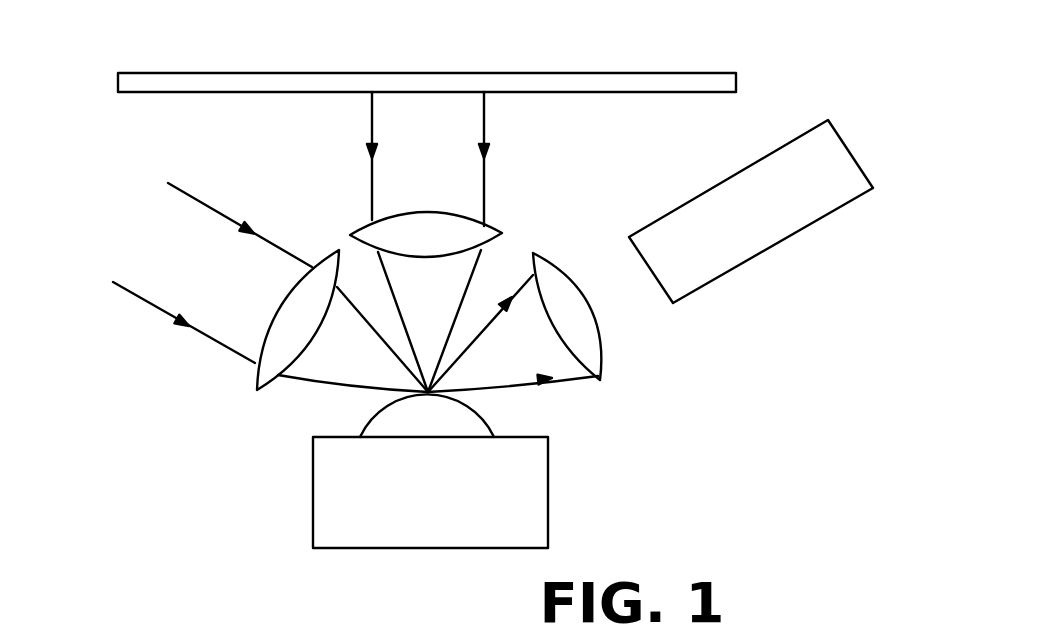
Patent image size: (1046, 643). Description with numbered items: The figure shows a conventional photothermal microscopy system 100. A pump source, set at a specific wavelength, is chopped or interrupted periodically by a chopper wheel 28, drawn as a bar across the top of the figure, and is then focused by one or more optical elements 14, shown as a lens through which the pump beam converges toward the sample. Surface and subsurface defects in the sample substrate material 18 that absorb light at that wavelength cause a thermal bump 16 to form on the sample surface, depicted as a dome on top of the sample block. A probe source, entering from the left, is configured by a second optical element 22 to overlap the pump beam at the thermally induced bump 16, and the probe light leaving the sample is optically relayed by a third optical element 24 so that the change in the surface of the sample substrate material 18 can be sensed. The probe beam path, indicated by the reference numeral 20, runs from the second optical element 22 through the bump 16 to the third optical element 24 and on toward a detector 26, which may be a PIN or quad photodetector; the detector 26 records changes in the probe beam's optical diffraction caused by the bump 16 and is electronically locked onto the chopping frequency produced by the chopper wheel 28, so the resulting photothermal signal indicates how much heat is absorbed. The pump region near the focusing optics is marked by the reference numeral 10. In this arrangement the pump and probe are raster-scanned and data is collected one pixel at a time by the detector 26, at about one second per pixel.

The photothermal microscopy system 100 is at (483, 283).
The normal-incidence illumination beam 10 is at (390, 265).
The optical elements 14 is at (500, 218).
The thermal bump 16 is at (483, 424).
The sample substrate material 18 is at (548, 483).
The oblique illumination beam 20 is at (357, 373).
The second optical element 22 is at (255, 373).
The third optical element 24 is at (603, 363).
The detector 26 is at (772, 247).
The chopper wheel 28 is at (640, 70).